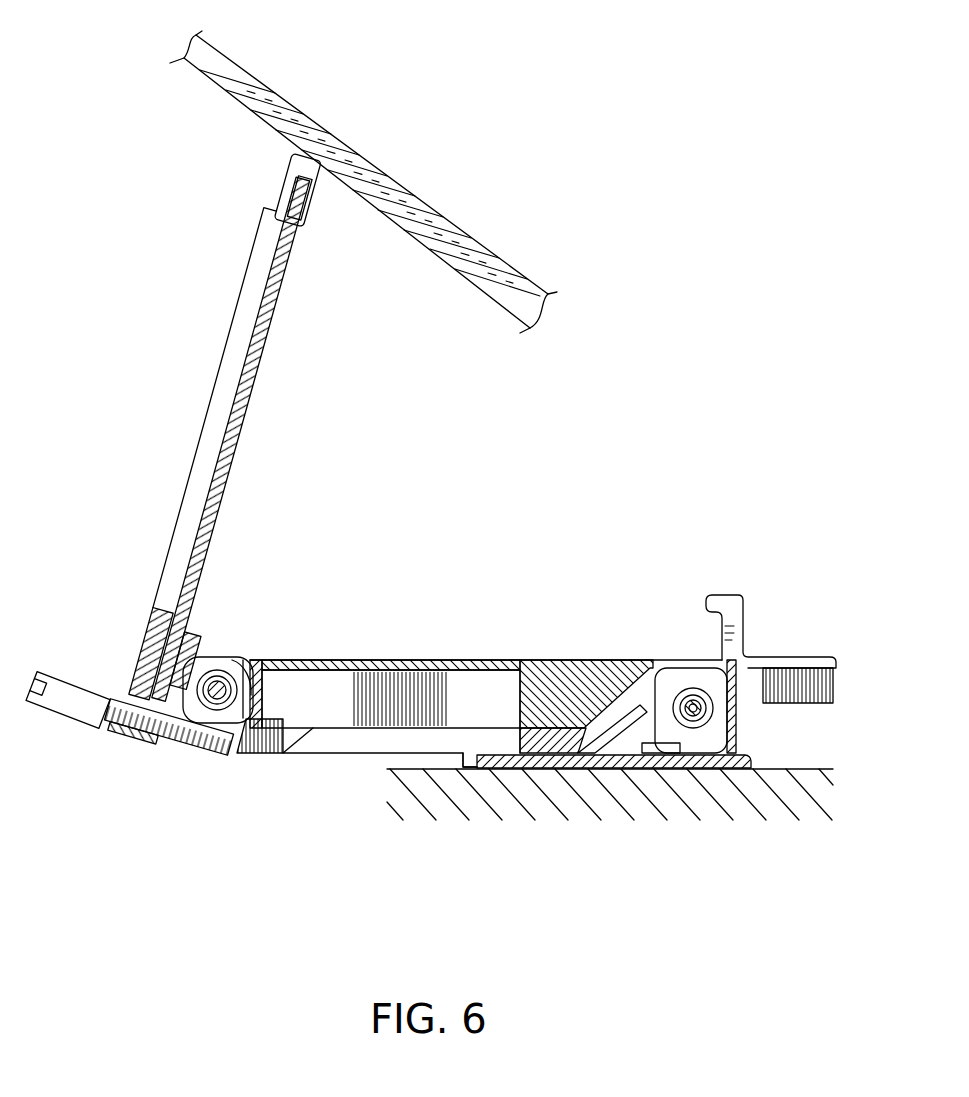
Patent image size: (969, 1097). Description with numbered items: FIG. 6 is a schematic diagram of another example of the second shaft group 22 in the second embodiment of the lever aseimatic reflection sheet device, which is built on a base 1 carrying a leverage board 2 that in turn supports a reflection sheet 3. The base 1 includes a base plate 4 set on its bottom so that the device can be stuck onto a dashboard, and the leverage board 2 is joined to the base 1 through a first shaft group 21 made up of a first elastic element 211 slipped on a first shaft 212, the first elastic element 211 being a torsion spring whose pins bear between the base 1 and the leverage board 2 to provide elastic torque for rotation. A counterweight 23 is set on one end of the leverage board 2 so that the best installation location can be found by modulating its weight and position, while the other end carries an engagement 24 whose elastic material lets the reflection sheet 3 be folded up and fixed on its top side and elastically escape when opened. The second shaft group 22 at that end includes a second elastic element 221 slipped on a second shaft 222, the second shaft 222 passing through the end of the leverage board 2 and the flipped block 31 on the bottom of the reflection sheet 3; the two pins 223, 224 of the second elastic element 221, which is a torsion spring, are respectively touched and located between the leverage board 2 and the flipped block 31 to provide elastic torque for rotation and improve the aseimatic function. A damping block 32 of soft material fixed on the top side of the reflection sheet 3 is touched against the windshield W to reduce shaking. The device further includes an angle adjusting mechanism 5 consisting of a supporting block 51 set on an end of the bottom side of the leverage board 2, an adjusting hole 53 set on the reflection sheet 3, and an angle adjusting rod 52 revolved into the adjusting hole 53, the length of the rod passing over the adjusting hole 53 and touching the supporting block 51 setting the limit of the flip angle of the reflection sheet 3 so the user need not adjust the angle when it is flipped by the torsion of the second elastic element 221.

The base 1 is at (733, 735).
The leverage board 2 is at (545, 660).
The first shaft group 21 is at (707, 687).
The first elastic element 211 is at (720, 707).
The first shaft 212 is at (660, 680).
The second shaft group 22 is at (240, 667).
The second elastic element 221 is at (250, 663).
The second shaft 222 is at (222, 663).
The pin 223 is at (290, 660).
The pin 224 is at (140, 665).
The counterweight 23 is at (818, 667).
The engagement 24 is at (710, 597).
The reflection sheet 3 is at (189, 398).
The flipped block 31 is at (218, 667).
The damping block 32 is at (287, 152).
The base plate 4 is at (478, 755).
The angle adjusting mechanism 5 is at (154, 821).
The supporting block 51 is at (262, 753).
The angle adjusting rod 52 is at (72, 717).
The adjusting hole 53 is at (140, 745).
The windshield W is at (397, 220).